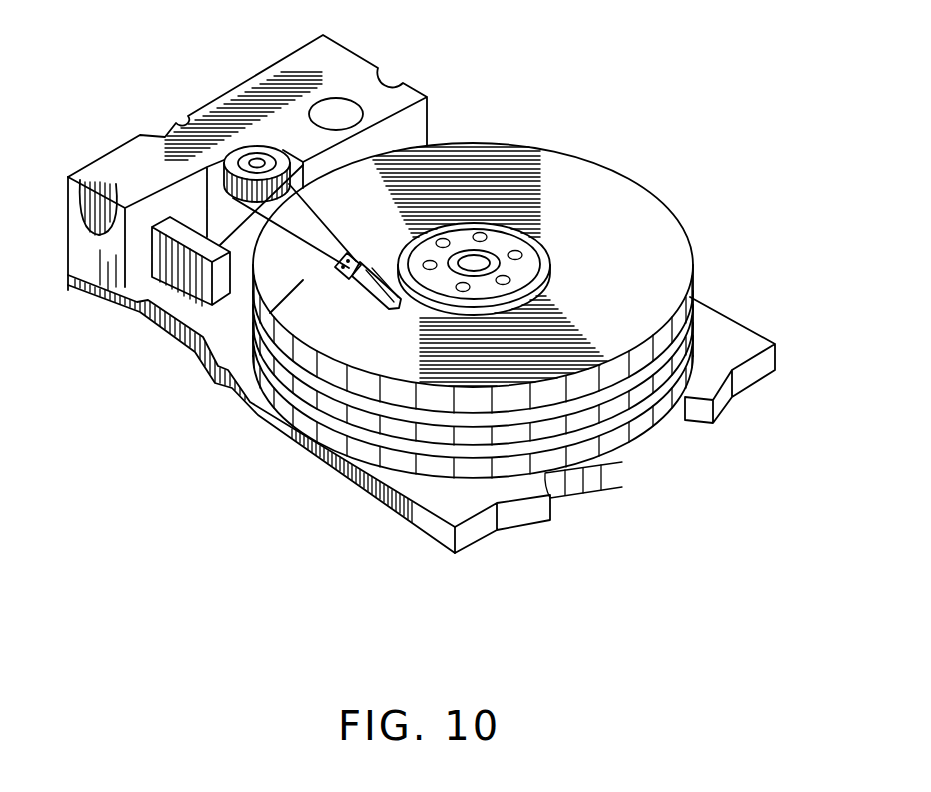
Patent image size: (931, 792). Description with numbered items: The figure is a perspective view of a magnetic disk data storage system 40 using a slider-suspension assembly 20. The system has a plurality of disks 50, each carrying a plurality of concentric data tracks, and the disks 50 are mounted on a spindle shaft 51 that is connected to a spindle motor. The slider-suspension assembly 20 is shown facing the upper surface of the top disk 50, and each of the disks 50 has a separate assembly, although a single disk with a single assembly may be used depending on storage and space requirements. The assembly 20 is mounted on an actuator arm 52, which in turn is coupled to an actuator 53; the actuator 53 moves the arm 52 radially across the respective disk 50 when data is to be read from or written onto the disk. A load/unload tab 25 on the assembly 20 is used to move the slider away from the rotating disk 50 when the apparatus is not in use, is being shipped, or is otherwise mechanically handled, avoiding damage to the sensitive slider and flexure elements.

The magnetic disk data storage system 40 is at (550, 103).
The disk 50 is at (655, 195).
The spindle shaft 51 is at (487, 268).
The actuator arm 52 is at (314, 247).
The actuator 53 is at (255, 160).
The slider-suspension assembly 20 is at (358, 287).
The load/unload tab 25 is at (394, 306).